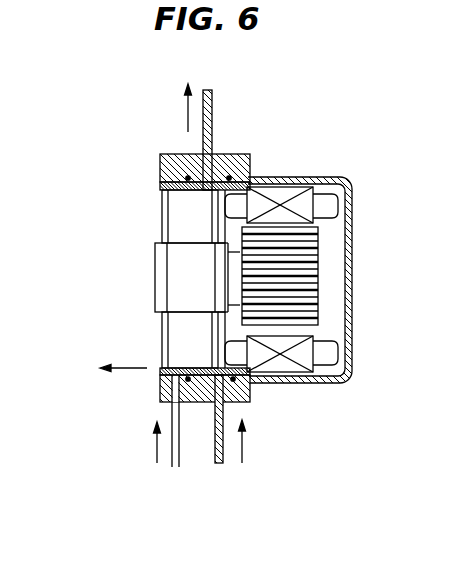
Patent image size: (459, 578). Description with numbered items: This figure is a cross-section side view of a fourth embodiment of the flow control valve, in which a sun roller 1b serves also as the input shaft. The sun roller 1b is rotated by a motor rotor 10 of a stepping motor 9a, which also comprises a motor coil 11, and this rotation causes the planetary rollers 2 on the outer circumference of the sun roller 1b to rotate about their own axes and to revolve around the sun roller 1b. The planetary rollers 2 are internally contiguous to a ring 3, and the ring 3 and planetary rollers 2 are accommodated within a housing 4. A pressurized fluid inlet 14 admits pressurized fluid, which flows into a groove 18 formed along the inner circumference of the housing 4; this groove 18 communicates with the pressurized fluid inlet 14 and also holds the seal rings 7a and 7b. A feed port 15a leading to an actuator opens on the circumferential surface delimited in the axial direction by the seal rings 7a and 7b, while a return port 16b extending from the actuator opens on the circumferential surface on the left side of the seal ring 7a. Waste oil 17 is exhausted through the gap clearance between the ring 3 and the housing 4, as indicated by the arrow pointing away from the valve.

The sun roller 1b is at (155, 268).
The planetary rollers 2 is at (162, 207).
The ring 3 is at (190, 367).
The housing 4 is at (240, 155).
The seal ring 7a is at (182, 156).
The seal ring 7b is at (246, 178).
The stepping motor 9a is at (343, 178).
The motor rotor 10 is at (318, 278).
The motor coil 11 is at (289, 192).
The pressurized fluid inlet 14 is at (223, 456).
The feed port 15a is at (211, 96).
The return port 16b is at (172, 408).
The waste oil 17 is at (111, 368).
The groove 18 is at (232, 154).